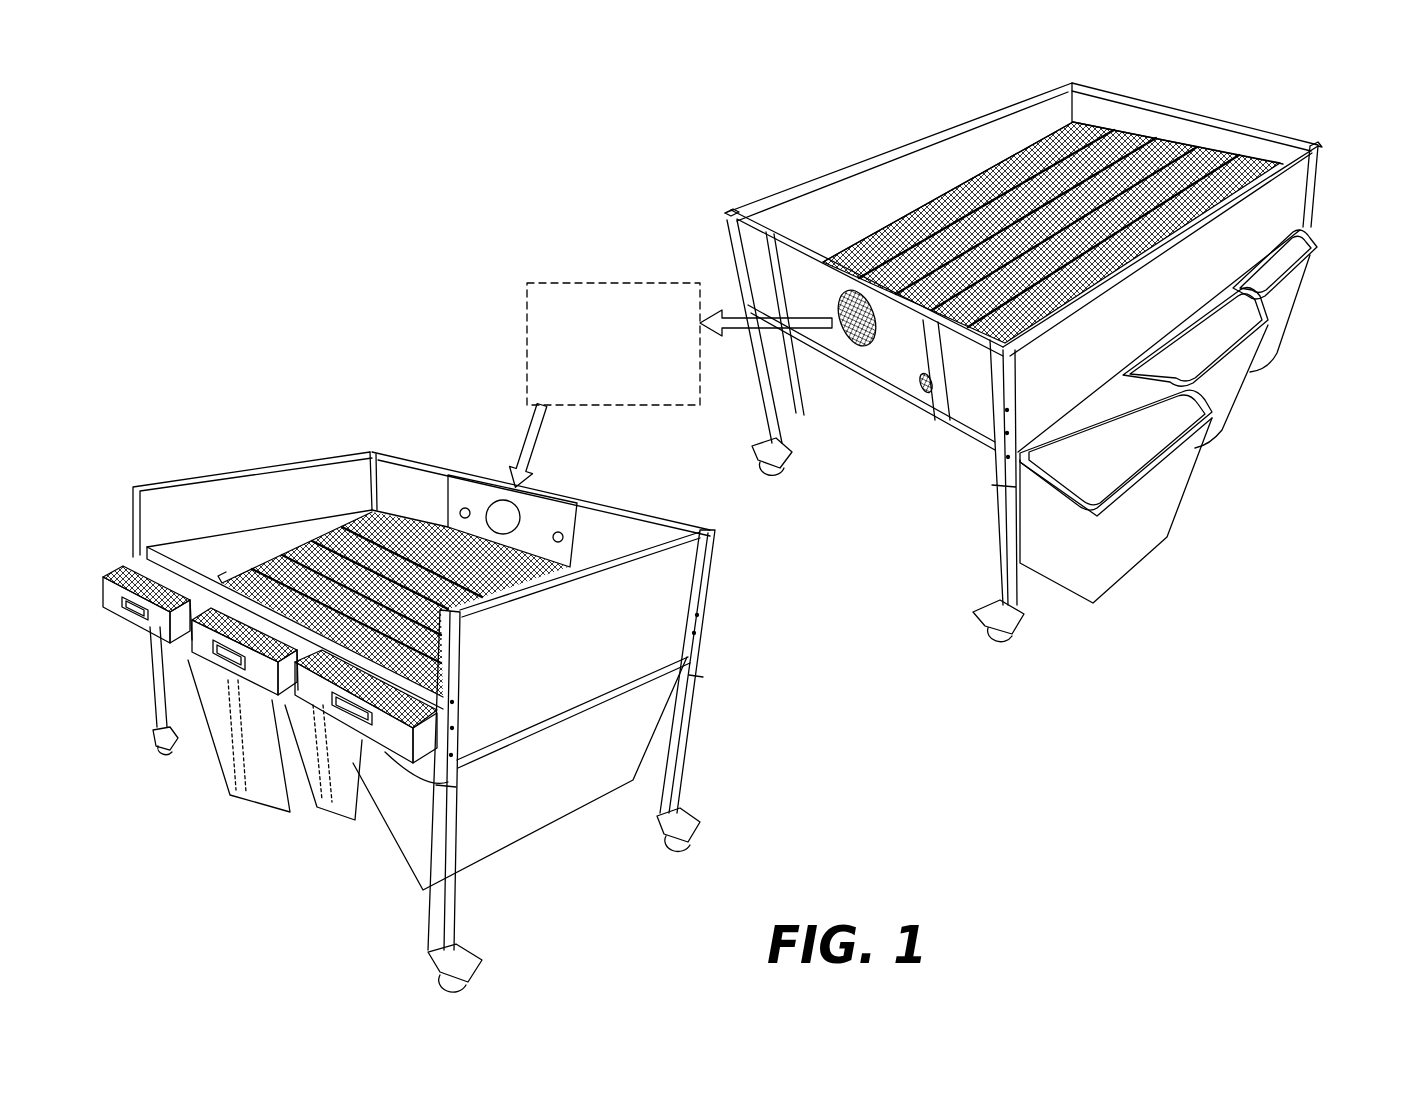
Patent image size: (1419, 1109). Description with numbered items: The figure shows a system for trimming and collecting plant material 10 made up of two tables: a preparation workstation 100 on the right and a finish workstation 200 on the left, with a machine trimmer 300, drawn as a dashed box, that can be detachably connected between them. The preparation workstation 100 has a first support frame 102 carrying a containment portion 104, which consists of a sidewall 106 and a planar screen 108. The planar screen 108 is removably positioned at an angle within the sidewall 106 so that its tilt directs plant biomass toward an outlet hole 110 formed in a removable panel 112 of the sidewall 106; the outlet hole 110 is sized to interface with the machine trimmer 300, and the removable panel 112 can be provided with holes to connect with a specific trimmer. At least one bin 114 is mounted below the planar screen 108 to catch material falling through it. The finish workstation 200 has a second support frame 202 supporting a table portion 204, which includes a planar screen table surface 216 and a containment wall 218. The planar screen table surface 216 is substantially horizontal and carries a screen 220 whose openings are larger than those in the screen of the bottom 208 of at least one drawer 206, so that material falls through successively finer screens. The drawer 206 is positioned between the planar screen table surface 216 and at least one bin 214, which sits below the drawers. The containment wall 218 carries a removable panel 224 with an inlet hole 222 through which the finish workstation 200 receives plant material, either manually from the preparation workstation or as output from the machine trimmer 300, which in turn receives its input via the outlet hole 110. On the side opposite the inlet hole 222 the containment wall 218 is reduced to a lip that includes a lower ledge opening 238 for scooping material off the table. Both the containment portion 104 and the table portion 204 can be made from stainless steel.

The system for trimming and collecting plant material 10 is at (290, 185).
The preparation workstation 100 is at (771, 149).
The first support frame 102 is at (722, 243).
The containment portion 104 is at (1328, 192).
The sidewall 106 is at (873, 157).
The planar screen 108 is at (1137, 218).
The outlet hole 110 is at (861, 328).
The removable panel 112 is at (907, 343).
The bin 114 is at (1170, 510).
The finish workstation 200 is at (232, 358).
The second support frame 202 is at (690, 625).
The table portion 204 is at (340, 446).
The drawer 206 is at (158, 625).
The bottom 208 is at (368, 760).
The bin 214 is at (384, 864).
The planar screen table surface 216 is at (290, 577).
The containment wall 218 is at (655, 515).
The screen 220 is at (326, 540).
The inlet hole 222 is at (502, 517).
The removable panel 224 is at (540, 523).
The lower ledge opening 238 is at (210, 713).
The machine trimmer 300 is at (593, 388).